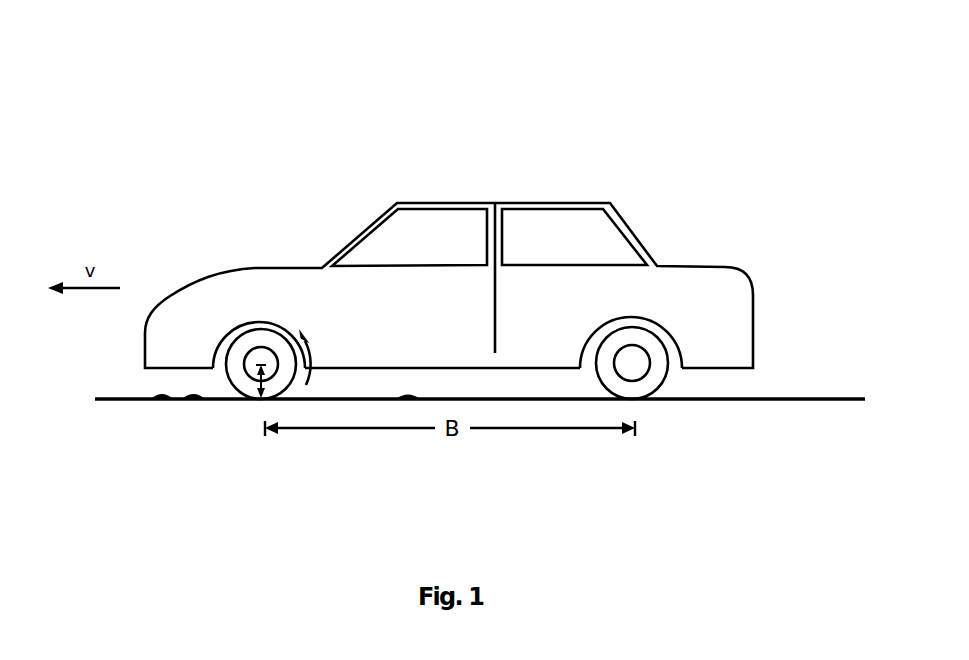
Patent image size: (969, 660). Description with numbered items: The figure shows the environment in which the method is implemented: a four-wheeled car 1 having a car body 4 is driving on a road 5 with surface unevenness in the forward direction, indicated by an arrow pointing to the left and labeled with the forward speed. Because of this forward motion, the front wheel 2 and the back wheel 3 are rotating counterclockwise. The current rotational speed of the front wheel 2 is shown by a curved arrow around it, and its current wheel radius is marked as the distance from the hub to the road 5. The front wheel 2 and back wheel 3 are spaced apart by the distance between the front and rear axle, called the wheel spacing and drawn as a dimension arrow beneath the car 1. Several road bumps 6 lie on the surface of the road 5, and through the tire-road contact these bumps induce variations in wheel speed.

The car 1 is at (597, 128).
The front wheel 2 is at (233, 397).
The back wheel 3 is at (647, 382).
The car body 4 is at (267, 288).
The road 5 is at (823, 398).
The road bumps 6 is at (190, 401).